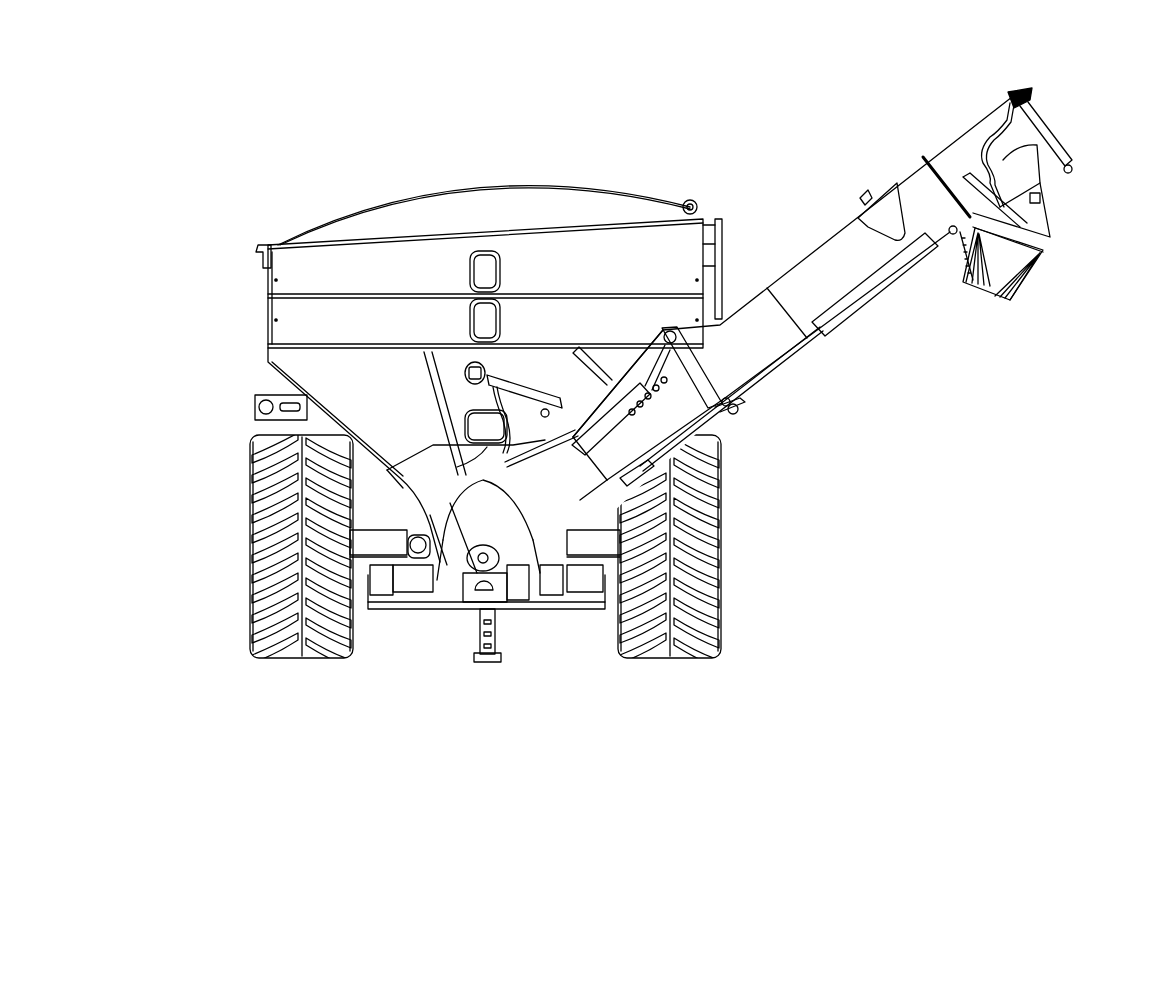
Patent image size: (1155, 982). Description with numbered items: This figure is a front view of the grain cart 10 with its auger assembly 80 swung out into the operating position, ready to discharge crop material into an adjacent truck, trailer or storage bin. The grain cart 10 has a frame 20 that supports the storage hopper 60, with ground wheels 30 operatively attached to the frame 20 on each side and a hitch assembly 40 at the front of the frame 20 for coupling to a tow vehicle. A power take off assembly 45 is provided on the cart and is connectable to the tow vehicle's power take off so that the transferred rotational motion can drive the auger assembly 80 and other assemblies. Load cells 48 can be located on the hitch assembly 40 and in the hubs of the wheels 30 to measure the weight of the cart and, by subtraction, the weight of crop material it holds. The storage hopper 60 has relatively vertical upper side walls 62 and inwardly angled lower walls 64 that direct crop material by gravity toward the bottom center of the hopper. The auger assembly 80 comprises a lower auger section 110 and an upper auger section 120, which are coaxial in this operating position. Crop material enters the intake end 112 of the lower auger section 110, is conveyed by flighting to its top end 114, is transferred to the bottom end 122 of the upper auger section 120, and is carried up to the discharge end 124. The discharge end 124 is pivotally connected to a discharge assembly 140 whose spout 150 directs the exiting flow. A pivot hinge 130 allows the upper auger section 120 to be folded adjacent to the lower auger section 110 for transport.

The grain cart 10 is at (612, 99).
The frame 20 is at (420, 560).
The ground wheels 30 is at (249, 582).
The hitch assembly 40 is at (442, 585).
The power take off (PTO) assembly 45 is at (535, 562).
The load cells 48 is at (249, 545).
The storage hopper 60 is at (268, 335).
The upper side walls 62 is at (268, 286).
The lower walls 64 is at (353, 390).
The auger assembly 80 is at (905, 343).
The lower auger section 110 is at (752, 365).
The intake end 112 is at (572, 565).
The top end 114 is at (727, 408).
The upper auger section 120 is at (892, 218).
The bottom end 122 is at (740, 412).
The discharge end 124 is at (940, 170).
The pivot hinge 130 is at (672, 332).
The discharge assembly 140 is at (1003, 163).
The spout 150 is at (1040, 277).